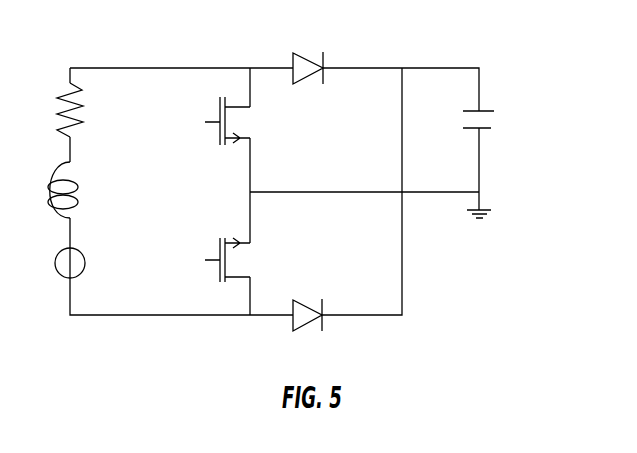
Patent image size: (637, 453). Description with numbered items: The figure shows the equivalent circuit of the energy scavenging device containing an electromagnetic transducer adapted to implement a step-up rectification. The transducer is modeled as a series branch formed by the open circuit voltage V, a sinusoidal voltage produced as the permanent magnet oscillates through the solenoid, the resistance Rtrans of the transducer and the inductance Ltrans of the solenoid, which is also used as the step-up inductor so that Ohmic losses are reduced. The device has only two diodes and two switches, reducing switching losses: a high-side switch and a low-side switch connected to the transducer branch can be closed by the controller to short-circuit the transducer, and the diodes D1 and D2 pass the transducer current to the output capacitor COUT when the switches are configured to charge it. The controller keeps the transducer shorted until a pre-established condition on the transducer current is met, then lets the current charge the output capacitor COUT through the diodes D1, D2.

The resistance of the transducer Rtrans is at (97, 110).
The inductance of the solenoid of the transducer Ltrans is at (92, 191).
The open circuit voltage V is at (80, 263).
The diode D1 is at (323, 56).
The diode D2 is at (323, 327).
The output capacitor COUT is at (499, 126).